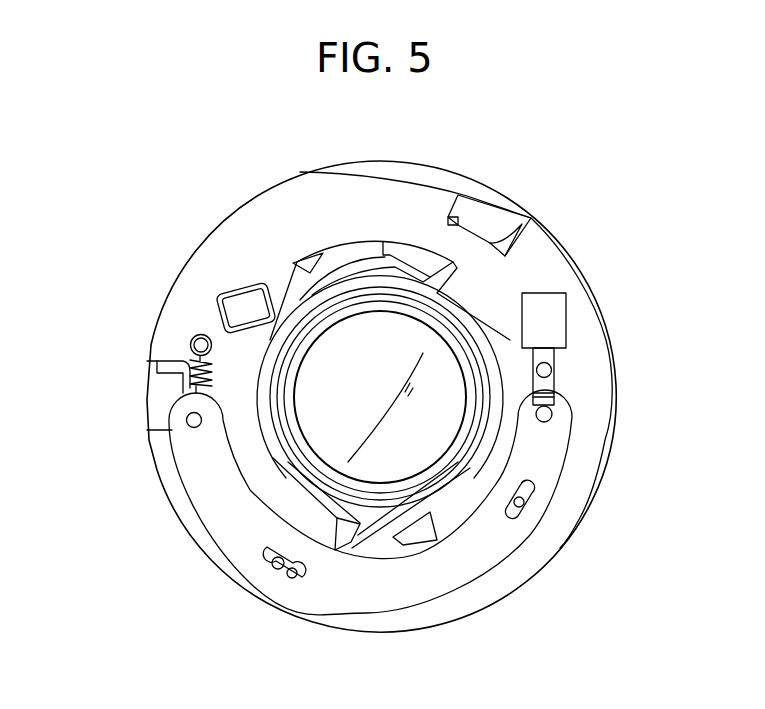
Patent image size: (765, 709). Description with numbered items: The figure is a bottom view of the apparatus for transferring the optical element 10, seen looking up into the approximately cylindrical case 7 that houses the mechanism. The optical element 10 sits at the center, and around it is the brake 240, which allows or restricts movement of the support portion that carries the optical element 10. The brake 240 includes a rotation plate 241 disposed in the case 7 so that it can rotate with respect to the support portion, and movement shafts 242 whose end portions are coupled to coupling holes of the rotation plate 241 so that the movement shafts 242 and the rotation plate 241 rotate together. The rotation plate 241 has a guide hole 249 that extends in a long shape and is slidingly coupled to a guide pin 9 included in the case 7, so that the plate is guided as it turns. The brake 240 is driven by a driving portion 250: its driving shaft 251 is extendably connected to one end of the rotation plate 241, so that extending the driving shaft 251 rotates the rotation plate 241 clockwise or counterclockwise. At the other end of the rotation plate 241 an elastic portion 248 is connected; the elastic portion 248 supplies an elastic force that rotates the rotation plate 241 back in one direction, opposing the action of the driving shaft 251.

The case 7 is at (311, 190).
The guide pin 9 is at (272, 566).
The optical element 10 is at (433, 442).
The brake 240 is at (302, 502).
The rotation plate 241 is at (198, 492).
The movement shaft 242 is at (189, 424).
The elastic portion 248 is at (183, 368).
The guide hole 249 is at (289, 580).
The driving portion 250 is at (562, 308).
The driving shaft 251 is at (551, 356).